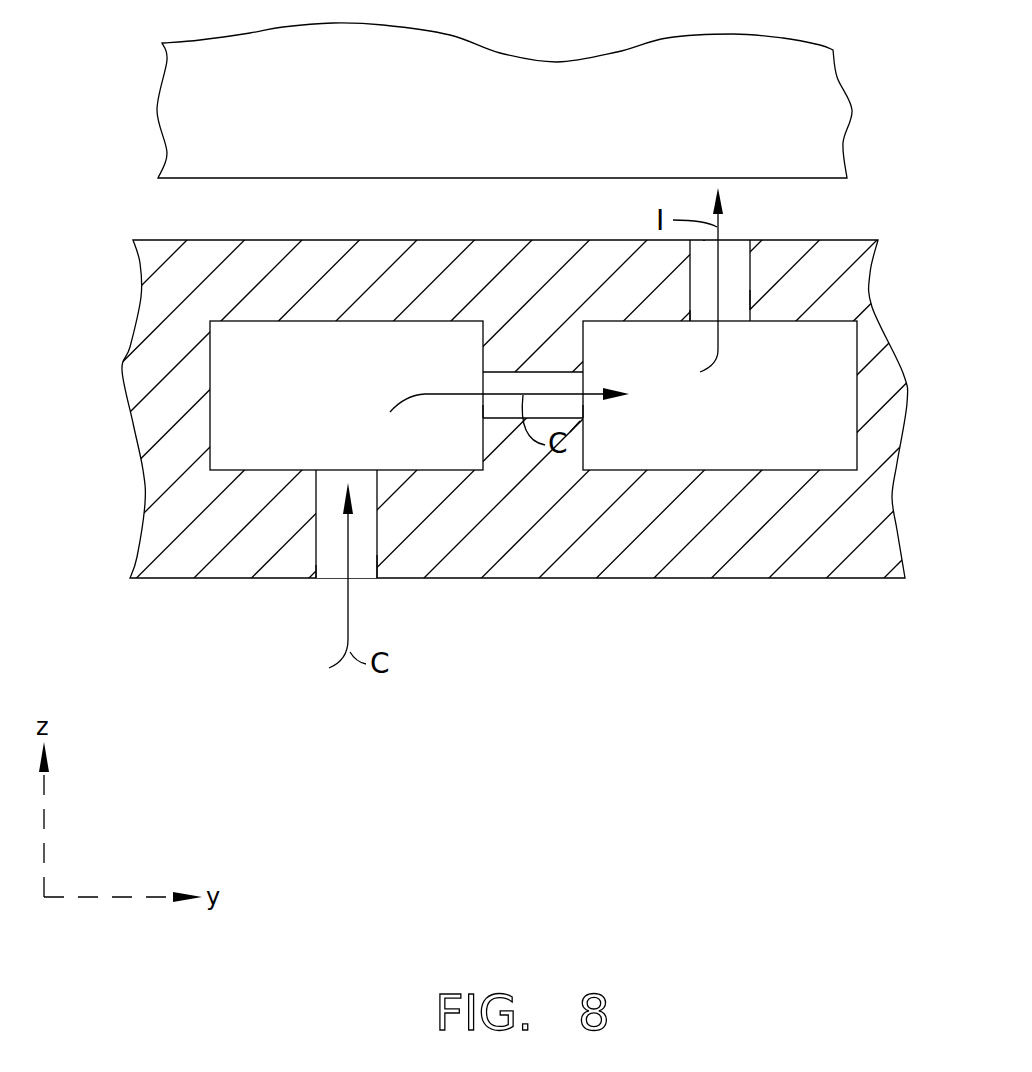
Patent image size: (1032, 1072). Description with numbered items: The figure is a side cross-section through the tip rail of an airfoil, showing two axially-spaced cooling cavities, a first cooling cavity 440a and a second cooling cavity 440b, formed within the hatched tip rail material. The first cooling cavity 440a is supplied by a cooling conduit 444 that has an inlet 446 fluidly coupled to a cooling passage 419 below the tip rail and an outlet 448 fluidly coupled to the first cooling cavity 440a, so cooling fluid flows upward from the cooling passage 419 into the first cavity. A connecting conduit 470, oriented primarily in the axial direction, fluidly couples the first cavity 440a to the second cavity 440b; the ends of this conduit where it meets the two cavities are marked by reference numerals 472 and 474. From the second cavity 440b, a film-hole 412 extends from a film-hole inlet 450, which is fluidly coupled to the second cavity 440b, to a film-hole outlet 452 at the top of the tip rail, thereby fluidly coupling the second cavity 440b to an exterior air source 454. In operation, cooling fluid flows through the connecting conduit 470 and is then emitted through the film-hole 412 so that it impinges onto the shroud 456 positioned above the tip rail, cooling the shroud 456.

The shroud 456 is at (459, 145).
The exterior air source 454 is at (175, 222).
The cooling passage 419 is at (511, 677).
The first cooling cavity 440a is at (300, 377).
The second cooling cavity 440b is at (745, 420).
The connecting conduit 470 is at (498, 383).
The channel inlet opening 472 is at (482, 410).
The channel outlet opening 474 is at (583, 410).
The outlet 448 is at (330, 470).
The inlet 446 is at (330, 578).
The cooling conduit 444 is at (365, 558).
The film-hole outlet 452 is at (740, 240).
The film-hole inlet 450 is at (700, 322).
The film-hole 412 is at (737, 295).